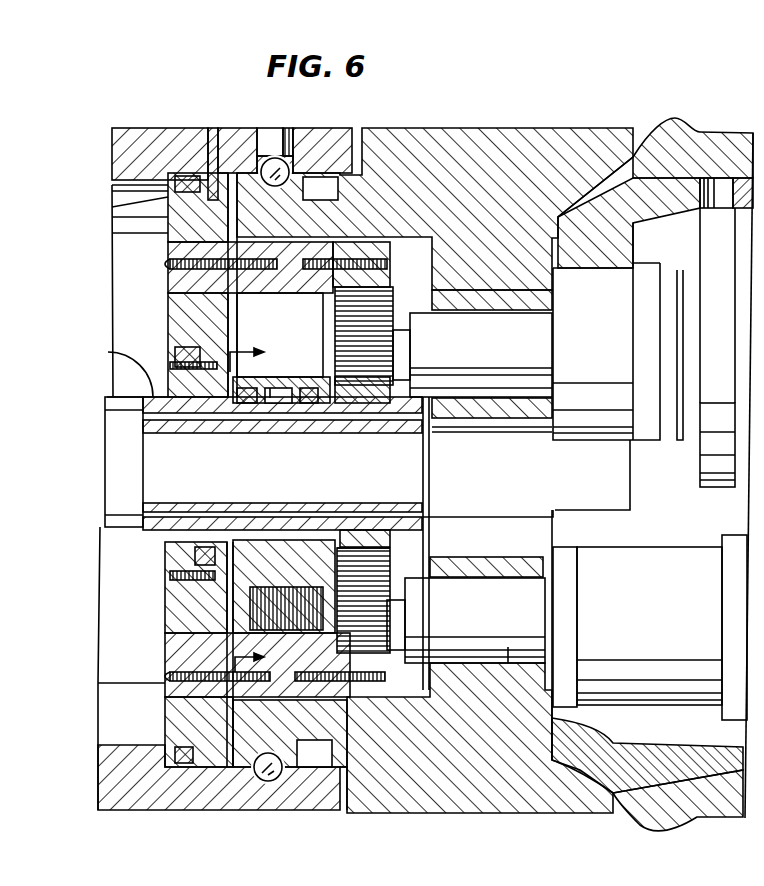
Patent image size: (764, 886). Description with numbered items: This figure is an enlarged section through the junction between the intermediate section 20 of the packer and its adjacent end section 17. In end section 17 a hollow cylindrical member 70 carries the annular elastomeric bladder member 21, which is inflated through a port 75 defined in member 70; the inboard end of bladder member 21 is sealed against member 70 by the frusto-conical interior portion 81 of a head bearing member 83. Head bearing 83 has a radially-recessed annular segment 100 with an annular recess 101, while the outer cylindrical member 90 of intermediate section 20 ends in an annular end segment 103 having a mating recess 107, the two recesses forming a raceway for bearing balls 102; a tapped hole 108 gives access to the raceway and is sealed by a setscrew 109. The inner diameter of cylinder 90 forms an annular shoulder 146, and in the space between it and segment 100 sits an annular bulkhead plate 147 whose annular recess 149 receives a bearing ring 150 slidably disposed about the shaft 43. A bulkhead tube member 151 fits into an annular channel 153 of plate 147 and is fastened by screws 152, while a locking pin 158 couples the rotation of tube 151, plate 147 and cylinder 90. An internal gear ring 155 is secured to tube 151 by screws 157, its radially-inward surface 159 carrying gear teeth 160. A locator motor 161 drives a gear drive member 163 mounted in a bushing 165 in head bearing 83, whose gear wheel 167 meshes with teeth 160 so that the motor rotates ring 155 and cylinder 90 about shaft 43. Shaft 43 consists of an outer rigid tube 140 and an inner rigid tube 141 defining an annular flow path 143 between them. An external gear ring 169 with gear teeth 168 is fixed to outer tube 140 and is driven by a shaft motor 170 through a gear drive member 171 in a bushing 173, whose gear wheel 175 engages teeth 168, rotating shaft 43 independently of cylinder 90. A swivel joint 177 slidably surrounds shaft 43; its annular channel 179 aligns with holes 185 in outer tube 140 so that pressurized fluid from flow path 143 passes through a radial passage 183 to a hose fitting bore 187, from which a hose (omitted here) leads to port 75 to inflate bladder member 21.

The intermediate section 20 is at (176, 72).
The end section 17 is at (513, 66).
The locking pin 158 is at (205, 140).
The setscrew 109 is at (268, 127).
The tapped hole 108 is at (318, 128).
The head bearing member 83 is at (555, 130).
The frusto-conical interior portion 81 is at (595, 172).
The bladder member 21 is at (722, 145).
The port 75 is at (722, 186).
The bearing balls 102 is at (270, 187).
The gear drive member 171 is at (528, 349).
The shaft motor 170 is at (700, 465).
The locator motor 161 is at (658, 558).
The bushing 173 is at (453, 290).
The radially-inward annular surface 159 is at (393, 310).
The gear wheel 175 is at (383, 348).
The bushing 165 is at (458, 683).
The gear wheel 167 is at (383, 612).
The internal gear ring 155 is at (366, 690).
The gear drive member 163 is at (508, 650).
The cylindrical member 70 is at (708, 750).
The annular shoulder 146 is at (112, 210).
The annular channel 153 is at (228, 243).
The bulkhead tube member 151 is at (336, 240).
The screws 152 is at (160, 683).
The screws 157 is at (390, 662).
The gear teeth 160 is at (395, 242).
The annular bulkhead plate 147 is at (168, 296).
The annular recess 149 is at (180, 345).
The swivel joint 177 is at (307, 377).
The holes 185 is at (282, 405).
The annular channel 179 is at (275, 400).
The outer rigid tube 140 is at (110, 354).
The inner rigid tube 141 is at (152, 425).
The annular flow path 143 is at (133, 404).
The shaft 43 is at (120, 535).
The gear teeth 168 is at (345, 535).
The external gear ring 169 is at (372, 535).
The annular bearing ring 150 is at (165, 547).
The radially-extending passage 183 is at (262, 572).
The hose fitting bore 187 is at (253, 612).
The annular recess 101 is at (265, 752).
The annular end segment 103 is at (328, 800).
The radially-recessed annular segment 100 is at (223, 793).
The annular recess 107 is at (272, 783).
The outer cylindrical member 90 is at (110, 788).